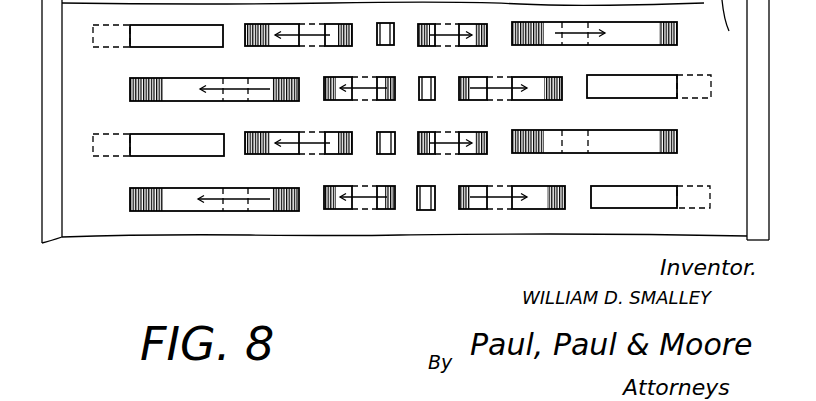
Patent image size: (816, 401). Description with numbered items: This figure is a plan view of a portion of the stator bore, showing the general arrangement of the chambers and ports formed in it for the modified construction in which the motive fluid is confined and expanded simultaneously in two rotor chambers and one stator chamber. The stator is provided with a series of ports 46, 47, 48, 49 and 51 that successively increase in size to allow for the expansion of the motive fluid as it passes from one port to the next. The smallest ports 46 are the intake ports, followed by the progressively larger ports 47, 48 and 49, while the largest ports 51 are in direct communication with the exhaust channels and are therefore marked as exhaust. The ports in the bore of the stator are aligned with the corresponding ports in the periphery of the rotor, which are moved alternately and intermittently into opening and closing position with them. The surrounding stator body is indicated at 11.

The casing / furnace wall 11 is at (280, 232).
The stator port 46 is at (387, 46).
The stator port 47 is at (474, 30).
The stator port 48 is at (338, 33).
The stator port 49 is at (614, 33).
The stator port 51 is at (194, 42).